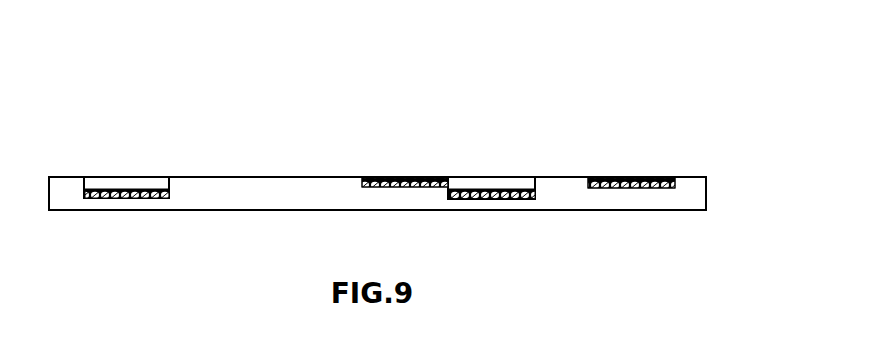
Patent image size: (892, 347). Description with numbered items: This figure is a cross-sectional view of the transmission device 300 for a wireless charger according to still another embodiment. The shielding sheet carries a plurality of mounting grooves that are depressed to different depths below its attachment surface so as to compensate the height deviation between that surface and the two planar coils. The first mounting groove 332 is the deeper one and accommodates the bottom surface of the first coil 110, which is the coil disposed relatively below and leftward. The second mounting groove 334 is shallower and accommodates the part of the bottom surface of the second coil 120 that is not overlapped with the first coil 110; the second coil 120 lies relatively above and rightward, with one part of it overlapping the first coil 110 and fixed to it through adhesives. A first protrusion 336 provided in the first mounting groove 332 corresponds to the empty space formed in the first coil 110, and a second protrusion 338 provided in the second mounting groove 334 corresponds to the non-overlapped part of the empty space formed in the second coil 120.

The transmission device 300 is at (377, 108).
The first mounting groove 332 is at (89, 177).
The first coil 110 is at (120, 189).
The first protrusion 336 is at (247, 183).
The second mounting groove 334 is at (408, 86).
The second coil 120 is at (413, 177).
The second protrusion 338 is at (562, 177).